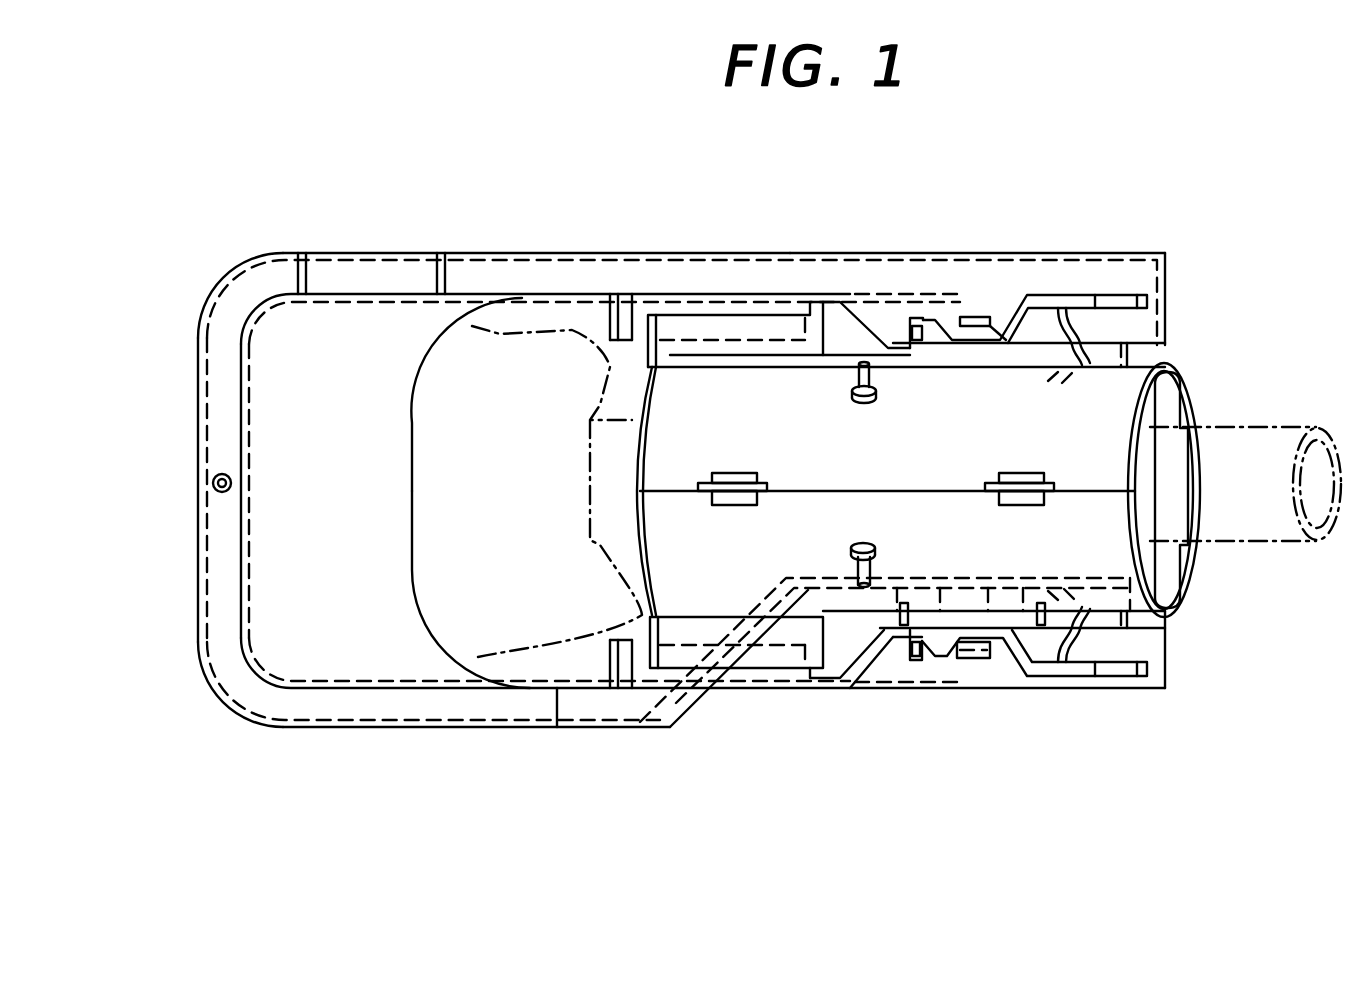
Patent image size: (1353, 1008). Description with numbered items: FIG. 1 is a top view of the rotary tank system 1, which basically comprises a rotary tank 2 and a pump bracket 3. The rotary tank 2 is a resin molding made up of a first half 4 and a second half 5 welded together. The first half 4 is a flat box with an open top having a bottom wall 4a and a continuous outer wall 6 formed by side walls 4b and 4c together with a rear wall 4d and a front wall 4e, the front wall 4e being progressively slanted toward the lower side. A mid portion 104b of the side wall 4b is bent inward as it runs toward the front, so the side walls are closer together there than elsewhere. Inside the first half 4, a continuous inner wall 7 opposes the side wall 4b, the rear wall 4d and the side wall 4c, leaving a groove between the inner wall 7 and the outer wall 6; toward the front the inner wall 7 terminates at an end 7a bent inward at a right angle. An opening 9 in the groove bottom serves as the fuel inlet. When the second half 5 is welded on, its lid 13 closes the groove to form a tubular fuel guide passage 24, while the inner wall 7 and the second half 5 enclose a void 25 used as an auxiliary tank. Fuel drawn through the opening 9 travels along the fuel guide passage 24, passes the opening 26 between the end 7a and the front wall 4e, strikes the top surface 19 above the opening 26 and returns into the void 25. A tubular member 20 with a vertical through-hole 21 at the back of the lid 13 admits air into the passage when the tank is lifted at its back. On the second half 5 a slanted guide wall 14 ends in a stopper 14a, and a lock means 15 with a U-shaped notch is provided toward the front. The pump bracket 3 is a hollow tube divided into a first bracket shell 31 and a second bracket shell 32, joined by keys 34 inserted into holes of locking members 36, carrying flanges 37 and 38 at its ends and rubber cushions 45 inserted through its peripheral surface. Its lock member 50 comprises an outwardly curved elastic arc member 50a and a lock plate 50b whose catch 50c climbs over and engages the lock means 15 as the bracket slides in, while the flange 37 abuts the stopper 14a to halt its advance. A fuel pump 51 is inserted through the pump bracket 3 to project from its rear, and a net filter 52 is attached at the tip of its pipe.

The rotary tank system 1 is at (362, 222).
The rotary tank 2 is at (791, 253).
The pump bracket 3 is at (1197, 389).
The first half 4 is at (893, 672).
The bottom wall 4a is at (557, 727).
The side wall 4b is at (343, 729).
The side wall 4c is at (481, 252).
The rear wall 4d is at (200, 574).
The front wall 4e is at (1172, 653).
The second half 5 is at (430, 728).
The outer wall 6 is at (575, 253).
The inner wall 7 is at (380, 303).
The end of inner wall 7a is at (955, 302).
The opening 9 is at (972, 640).
The lid 13 is at (242, 672).
The guide wall 14 is at (718, 307).
The stopper 14a is at (628, 297).
The lock means 15 is at (924, 327).
The top surface 19 is at (1132, 338).
The tubular member 20 is at (214, 487).
The through-hole 21 is at (218, 478).
The fuel guide passage 24 is at (257, 722).
The void 25 is at (530, 652).
The opening 26 is at (1010, 299).
The first bracket shell 31 is at (1110, 575).
The second bracket shell 32 is at (1152, 370).
The keys 34 is at (733, 505).
The locking members 36 is at (768, 488).
The flange 37 is at (640, 437).
The flange 38 is at (1178, 607).
The rubber cushion 45 is at (872, 378).
The lock member 50 is at (1076, 293).
The elastic arc member 50a is at (1082, 338).
The lock plate 50b is at (1005, 317).
The catch 50c is at (914, 325).
The fuel pump 51 is at (590, 522).
The net filter 52 is at (537, 340).
The mid portion of side wall 104b is at (705, 705).